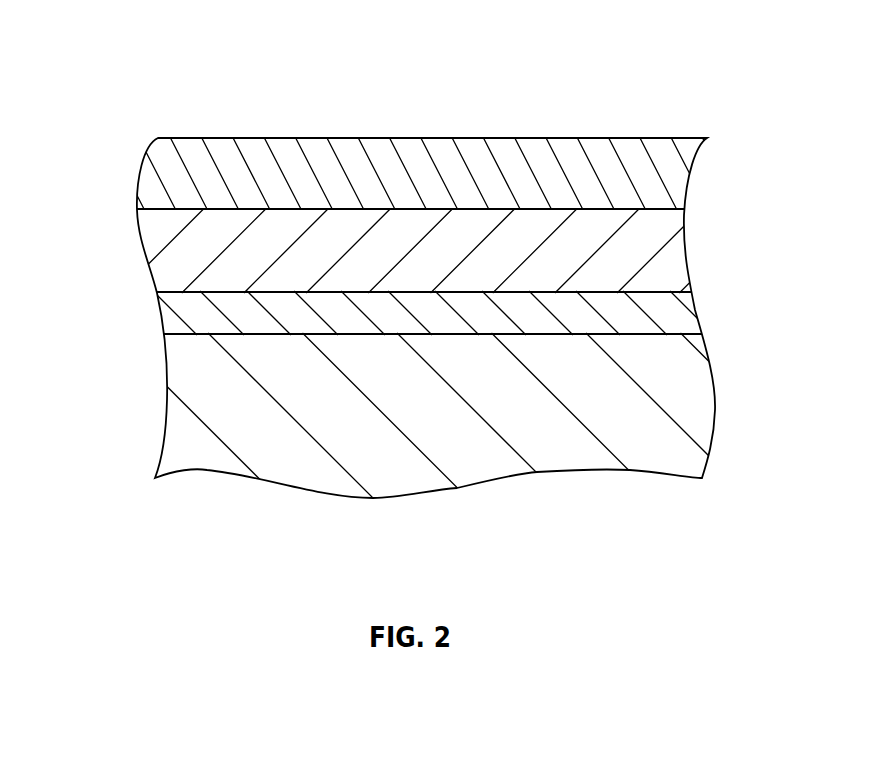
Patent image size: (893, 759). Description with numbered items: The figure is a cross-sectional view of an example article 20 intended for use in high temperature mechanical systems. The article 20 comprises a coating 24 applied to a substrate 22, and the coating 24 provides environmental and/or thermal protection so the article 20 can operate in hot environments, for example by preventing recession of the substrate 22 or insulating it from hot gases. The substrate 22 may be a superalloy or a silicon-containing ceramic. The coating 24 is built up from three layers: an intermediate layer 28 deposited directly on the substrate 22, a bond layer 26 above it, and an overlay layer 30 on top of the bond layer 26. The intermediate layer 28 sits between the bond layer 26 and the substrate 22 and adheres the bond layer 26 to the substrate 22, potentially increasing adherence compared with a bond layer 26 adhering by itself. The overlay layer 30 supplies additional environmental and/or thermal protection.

The article 20 is at (627, 53).
The substrate 22 is at (173, 366).
The coating 24 is at (717, 138).
The bond layer 26 is at (153, 231).
The intermediate layer 28 is at (167, 318).
The overlay layer 30 is at (152, 167).